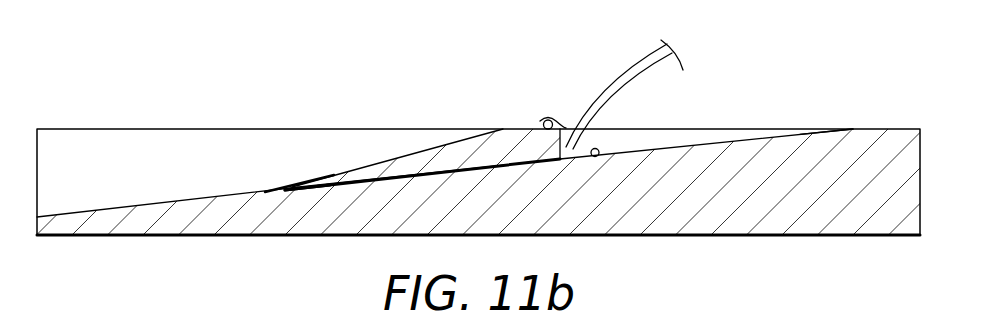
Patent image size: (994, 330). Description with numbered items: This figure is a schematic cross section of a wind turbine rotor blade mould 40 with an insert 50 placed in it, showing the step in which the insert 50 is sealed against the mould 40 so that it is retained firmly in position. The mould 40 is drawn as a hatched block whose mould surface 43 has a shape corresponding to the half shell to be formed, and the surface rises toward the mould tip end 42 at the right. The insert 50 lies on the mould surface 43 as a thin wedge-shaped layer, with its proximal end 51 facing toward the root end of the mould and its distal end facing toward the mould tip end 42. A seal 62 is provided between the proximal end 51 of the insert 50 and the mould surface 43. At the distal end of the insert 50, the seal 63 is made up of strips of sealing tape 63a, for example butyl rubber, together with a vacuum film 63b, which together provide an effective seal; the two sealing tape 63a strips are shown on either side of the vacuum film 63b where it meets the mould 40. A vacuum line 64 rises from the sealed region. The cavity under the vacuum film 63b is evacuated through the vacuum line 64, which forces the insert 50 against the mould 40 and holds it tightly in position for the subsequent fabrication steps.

The mould 40 is at (740, 222).
The mould tip end 42 is at (853, 129).
The mould surface 43 is at (129, 207).
The insert 50 is at (398, 165).
The proximal end 51 is at (292, 192).
The seal 62 is at (292, 192).
The seal 63 is at (545, 73).
The sealing tape 63a is at (546, 121).
The vacuum film 63b is at (561, 128).
The vacuum line 64 is at (643, 65).